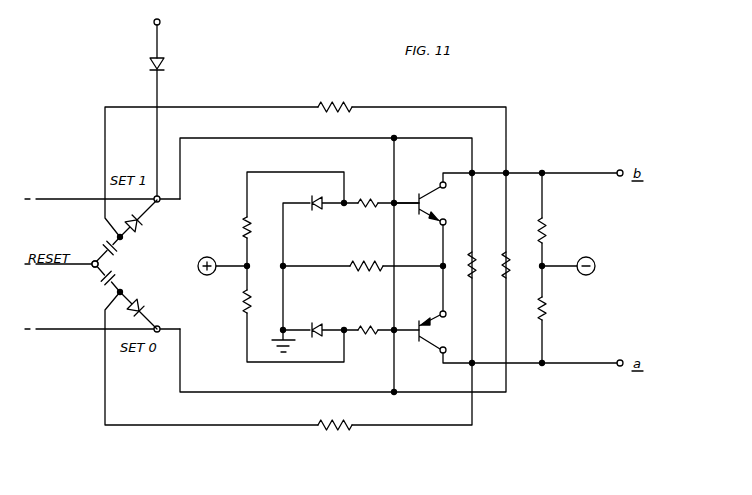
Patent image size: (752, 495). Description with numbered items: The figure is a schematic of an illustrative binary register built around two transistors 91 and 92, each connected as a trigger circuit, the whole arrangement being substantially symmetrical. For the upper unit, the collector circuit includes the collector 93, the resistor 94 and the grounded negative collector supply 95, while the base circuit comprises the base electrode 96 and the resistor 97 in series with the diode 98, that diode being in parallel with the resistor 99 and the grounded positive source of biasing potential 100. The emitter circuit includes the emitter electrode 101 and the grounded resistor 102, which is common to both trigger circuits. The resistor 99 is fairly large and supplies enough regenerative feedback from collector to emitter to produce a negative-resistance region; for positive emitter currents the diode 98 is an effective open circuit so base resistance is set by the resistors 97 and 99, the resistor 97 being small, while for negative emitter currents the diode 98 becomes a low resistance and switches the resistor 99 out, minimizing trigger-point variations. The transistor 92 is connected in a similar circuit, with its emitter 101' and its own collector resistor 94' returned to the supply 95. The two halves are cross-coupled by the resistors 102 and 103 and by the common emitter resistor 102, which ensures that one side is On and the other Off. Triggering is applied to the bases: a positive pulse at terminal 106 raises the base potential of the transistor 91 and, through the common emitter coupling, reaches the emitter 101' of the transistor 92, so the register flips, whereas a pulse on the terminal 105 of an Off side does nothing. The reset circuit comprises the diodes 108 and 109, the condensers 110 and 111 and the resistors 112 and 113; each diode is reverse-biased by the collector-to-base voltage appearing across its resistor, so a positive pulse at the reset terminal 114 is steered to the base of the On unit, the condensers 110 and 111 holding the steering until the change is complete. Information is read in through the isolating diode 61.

The isolating diode 61 is at (148, 64).
The resistor 112 is at (326, 100).
The resistor 113 is at (333, 428).
The input terminal 106 is at (160, 197).
The terminal 105 is at (161, 330).
The diode 108 is at (138, 232).
The diode 109 is at (143, 305).
The condenser 110 is at (105, 238).
The condenser 111 is at (98, 287).
The reset terminal 114 is at (92, 268).
The resistor 99 is at (240, 231).
The positive source of biasing potential 100 is at (205, 257).
The diode 98 is at (310, 197).
The resistor 97 is at (367, 197).
The base electrode 96 is at (408, 200).
The transistor 91 is at (403, 239).
The collector 93 is at (441, 181).
The emitter electrode 101 is at (428, 266).
The grounded resistor 102 is at (383, 268).
The transistor 92 is at (403, 313).
The emitter 101' is at (428, 355).
The resistor 103 is at (500, 263).
The resistor 94 is at (560, 230).
The resistor 94' is at (563, 310).
The negative collector supply 95 is at (593, 262).